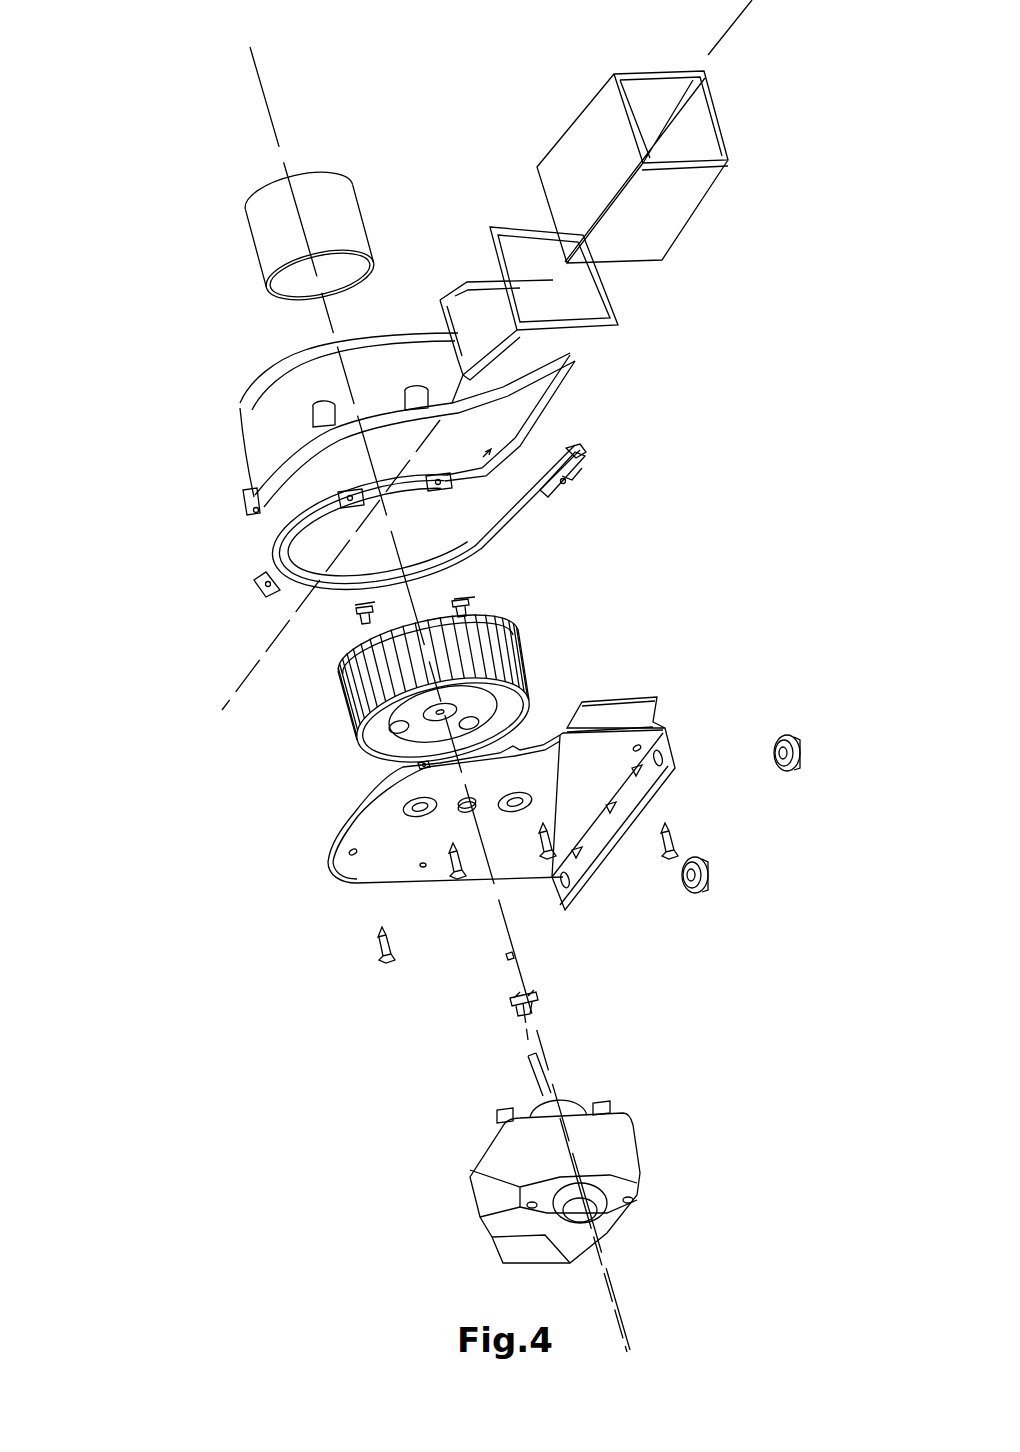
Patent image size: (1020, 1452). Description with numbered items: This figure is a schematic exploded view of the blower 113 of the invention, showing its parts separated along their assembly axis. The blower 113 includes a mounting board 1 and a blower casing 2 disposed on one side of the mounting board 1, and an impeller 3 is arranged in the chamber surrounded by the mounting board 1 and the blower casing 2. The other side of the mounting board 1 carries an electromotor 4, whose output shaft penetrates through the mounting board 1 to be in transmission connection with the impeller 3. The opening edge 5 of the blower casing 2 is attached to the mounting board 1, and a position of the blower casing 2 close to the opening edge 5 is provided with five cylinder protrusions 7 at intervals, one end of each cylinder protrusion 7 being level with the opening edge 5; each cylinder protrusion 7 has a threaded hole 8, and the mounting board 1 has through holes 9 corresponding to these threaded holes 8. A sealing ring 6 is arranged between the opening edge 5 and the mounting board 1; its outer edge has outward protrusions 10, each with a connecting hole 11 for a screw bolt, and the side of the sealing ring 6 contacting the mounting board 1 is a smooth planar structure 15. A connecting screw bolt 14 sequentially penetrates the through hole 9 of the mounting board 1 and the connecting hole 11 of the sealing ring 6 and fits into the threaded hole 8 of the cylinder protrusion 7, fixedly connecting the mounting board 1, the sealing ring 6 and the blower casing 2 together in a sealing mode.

The mounting board 1 is at (362, 875).
The blower casing 2 is at (252, 428).
The impeller 3 is at (362, 717).
The electromotor 4 is at (470, 1193).
The opening edge 5 is at (247, 508).
The sealing ring 6 is at (297, 588).
The cylinder protrusion 7 is at (330, 412).
The threaded hole 8 is at (334, 425).
The through hole 9 is at (423, 767).
The outward protrusion 10 is at (380, 467).
The connecting hole 11 is at (380, 540).
The connecting screw bolt 14 is at (467, 803).
The smooth planar structure 15 is at (572, 452).
The blower 113 is at (733, 676).